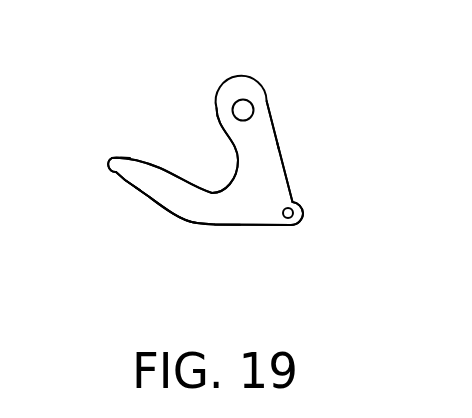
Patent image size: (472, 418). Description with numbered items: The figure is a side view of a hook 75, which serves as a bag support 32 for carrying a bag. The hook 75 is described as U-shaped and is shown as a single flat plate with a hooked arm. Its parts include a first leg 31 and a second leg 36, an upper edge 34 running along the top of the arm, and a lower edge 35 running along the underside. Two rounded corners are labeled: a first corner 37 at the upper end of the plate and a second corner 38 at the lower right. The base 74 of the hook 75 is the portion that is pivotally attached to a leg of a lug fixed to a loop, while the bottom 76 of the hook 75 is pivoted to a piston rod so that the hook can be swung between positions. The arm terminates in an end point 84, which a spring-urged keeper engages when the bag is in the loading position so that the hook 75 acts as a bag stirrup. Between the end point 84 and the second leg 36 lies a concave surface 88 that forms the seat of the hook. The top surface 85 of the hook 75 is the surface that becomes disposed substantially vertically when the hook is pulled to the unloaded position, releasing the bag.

The first leg 31 is at (125, 180).
The bag support 32 is at (172, 205).
The upper edge 34 is at (162, 168).
The lower edge 35 is at (199, 224).
The second leg 36 is at (285, 170).
The first corner 37 is at (249, 84).
The second corner 38 is at (303, 221).
The base 74 is at (266, 118).
The hook 75 is at (270, 148).
The bottom 76 is at (237, 226).
The end point 84 is at (107, 160).
The top surface 85 is at (212, 191).
The concave surface 88 is at (147, 195).